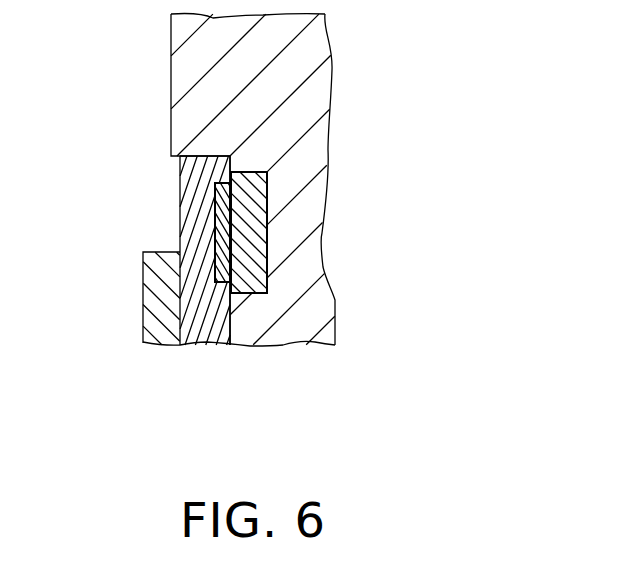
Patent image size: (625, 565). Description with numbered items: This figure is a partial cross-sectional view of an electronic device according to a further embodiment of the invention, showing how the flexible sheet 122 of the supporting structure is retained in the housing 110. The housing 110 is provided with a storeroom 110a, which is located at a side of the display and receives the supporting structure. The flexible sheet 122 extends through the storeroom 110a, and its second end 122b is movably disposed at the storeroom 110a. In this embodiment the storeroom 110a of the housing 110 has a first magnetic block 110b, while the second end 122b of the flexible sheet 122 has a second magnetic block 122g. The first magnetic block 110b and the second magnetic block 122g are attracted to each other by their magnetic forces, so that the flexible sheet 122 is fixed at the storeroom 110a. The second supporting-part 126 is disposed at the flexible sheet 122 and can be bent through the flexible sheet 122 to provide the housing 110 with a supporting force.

The housing 110 is at (297, 98).
The storeroom 110a is at (230, 313).
The first magnetic block 110b is at (252, 246).
The flexible sheet 122 is at (195, 181).
The second end 122b is at (200, 156).
The second magnetic block 122g is at (226, 222).
The second supporting-part 126 is at (160, 310).